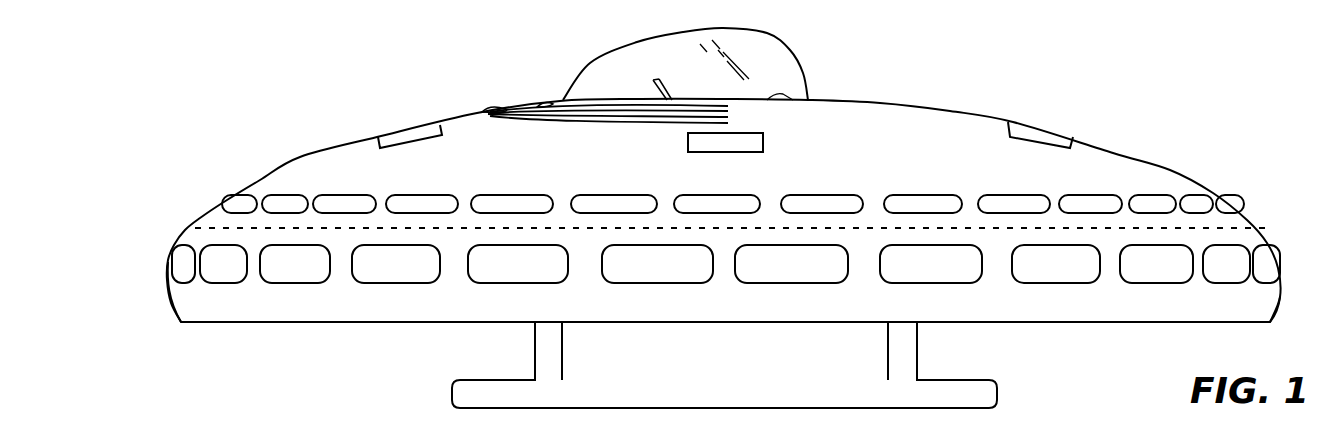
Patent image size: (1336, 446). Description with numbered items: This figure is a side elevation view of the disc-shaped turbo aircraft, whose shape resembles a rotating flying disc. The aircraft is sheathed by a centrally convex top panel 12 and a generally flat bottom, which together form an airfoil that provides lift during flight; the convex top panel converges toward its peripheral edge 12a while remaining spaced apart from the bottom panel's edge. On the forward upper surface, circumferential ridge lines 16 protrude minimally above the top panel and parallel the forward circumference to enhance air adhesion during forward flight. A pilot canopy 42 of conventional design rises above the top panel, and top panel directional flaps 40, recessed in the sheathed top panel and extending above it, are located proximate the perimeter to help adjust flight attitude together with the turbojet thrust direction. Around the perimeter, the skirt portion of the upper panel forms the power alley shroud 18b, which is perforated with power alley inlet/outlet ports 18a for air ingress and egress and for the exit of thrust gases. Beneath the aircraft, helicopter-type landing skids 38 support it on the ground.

The top panel 12 is at (305, 157).
The peripheral edge of top panel 12a is at (1260, 318).
The top panel circumferential ridge lines 16 is at (515, 105).
The power alley inlet/outlet ports 18a is at (183, 258).
The power alley shroud 18b is at (172, 305).
The landing skids 38 is at (997, 392).
The top panel directional flaps 40 is at (392, 137).
The pilot canopy 42 is at (808, 65).